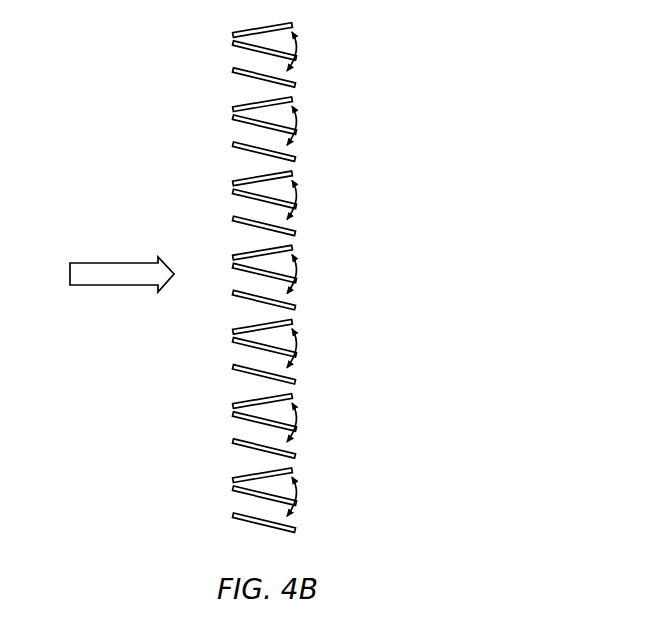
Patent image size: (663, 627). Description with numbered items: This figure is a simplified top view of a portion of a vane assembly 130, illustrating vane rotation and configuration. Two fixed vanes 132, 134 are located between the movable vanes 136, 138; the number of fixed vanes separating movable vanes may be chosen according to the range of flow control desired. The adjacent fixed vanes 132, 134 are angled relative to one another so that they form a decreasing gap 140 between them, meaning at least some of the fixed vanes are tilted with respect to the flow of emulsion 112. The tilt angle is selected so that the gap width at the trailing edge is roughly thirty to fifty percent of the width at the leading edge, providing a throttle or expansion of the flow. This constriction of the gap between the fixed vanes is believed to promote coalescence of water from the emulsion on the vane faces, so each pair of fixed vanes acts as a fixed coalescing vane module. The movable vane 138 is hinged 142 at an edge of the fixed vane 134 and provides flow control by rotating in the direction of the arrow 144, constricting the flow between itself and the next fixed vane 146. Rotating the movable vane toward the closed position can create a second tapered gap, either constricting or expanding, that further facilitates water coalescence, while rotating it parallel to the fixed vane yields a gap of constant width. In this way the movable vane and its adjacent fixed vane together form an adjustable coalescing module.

The emulsion 112 is at (110, 287).
The vane assembly 130 is at (437, 97).
The fixed vane 132 is at (300, 157).
The fixed vane 134 is at (293, 173).
The movable vane 136 is at (300, 131).
The movable vane 138 is at (293, 217).
The decreasing gap 140 is at (245, 166).
The hinge 142 is at (238, 183).
The arrow 144 is at (299, 199).
The next fixed vane 146 is at (292, 242).